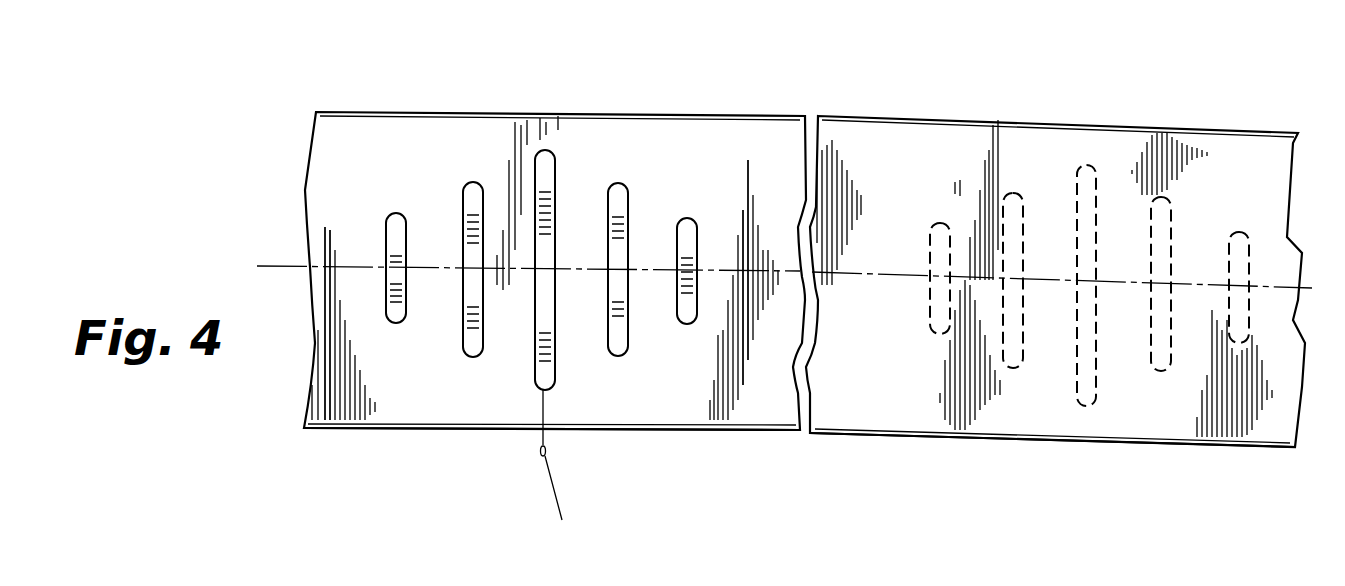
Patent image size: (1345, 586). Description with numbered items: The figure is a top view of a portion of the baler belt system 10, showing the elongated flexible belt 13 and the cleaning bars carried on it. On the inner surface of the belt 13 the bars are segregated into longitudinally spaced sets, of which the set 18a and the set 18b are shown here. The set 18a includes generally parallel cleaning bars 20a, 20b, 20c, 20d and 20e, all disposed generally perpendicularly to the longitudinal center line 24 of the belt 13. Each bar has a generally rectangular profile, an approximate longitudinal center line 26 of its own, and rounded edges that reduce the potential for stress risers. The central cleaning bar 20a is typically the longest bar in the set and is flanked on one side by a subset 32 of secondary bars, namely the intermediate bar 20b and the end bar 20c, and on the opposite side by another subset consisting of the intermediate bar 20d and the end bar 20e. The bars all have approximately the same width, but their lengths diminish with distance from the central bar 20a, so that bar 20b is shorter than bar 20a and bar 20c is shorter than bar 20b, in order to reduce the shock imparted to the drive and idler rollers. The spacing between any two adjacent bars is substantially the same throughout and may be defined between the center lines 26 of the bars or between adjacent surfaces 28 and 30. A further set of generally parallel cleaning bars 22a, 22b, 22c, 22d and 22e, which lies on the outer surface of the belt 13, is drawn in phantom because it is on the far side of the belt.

The baler belt system 10 is at (804, 280).
The elongated flexible belt 13 is at (767, 432).
The set of cleaning bars 18a is at (454, 383).
The set of cleaning bars 18b is at (1050, 149).
The central cleaning bar 20a is at (536, 150).
The intermediate cleaning bar 20b is at (465, 183).
The end cleaning bar 20c is at (386, 226).
The intermediate cleaning bar 20d is at (612, 183).
The end cleaning bar 20e is at (690, 218).
The cleaning bar 22a is at (1087, 165).
The cleaning bar 22b is at (1013, 193).
The cleaning bar 22c is at (938, 223).
The cleaning bar 22d is at (1160, 197).
The cleaning bar 22e is at (1238, 232).
The longitudinal center line 24 is at (279, 261).
The longitudinal center line of cleaning bar 26 is at (561, 467).
The adjacent surface 28 is at (662, 155).
The adjacent surface 30 is at (398, 146).
The subset of secondary bars 32 is at (484, 184).